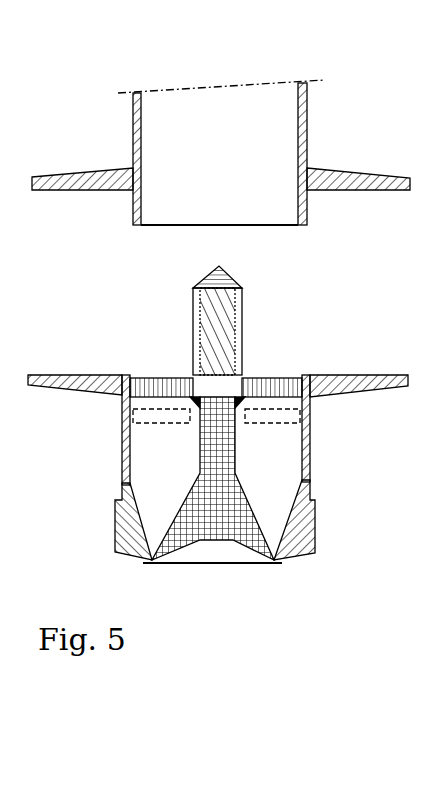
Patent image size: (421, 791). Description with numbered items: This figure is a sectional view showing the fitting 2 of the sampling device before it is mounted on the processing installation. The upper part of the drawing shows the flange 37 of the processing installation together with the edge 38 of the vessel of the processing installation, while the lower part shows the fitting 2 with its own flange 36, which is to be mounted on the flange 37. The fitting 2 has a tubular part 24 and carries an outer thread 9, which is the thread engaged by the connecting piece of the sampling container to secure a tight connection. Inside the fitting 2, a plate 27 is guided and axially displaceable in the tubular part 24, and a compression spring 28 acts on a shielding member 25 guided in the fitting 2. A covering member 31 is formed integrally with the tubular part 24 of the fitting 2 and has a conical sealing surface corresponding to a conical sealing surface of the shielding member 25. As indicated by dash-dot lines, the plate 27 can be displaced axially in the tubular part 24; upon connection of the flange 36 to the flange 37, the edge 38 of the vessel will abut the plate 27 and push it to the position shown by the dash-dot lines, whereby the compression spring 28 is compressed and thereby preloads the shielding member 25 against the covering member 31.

The fitting 2 is at (310, 450).
The outer thread 9 is at (115, 528).
The tubular part 24 is at (157, 453).
The shielding member 25 is at (195, 540).
The plate 27 is at (272, 388).
The compression spring 28 is at (242, 320).
The covering member 31 is at (292, 562).
The flange 36 is at (347, 383).
The flange 37 is at (340, 190).
The edge 38 is at (133, 225).